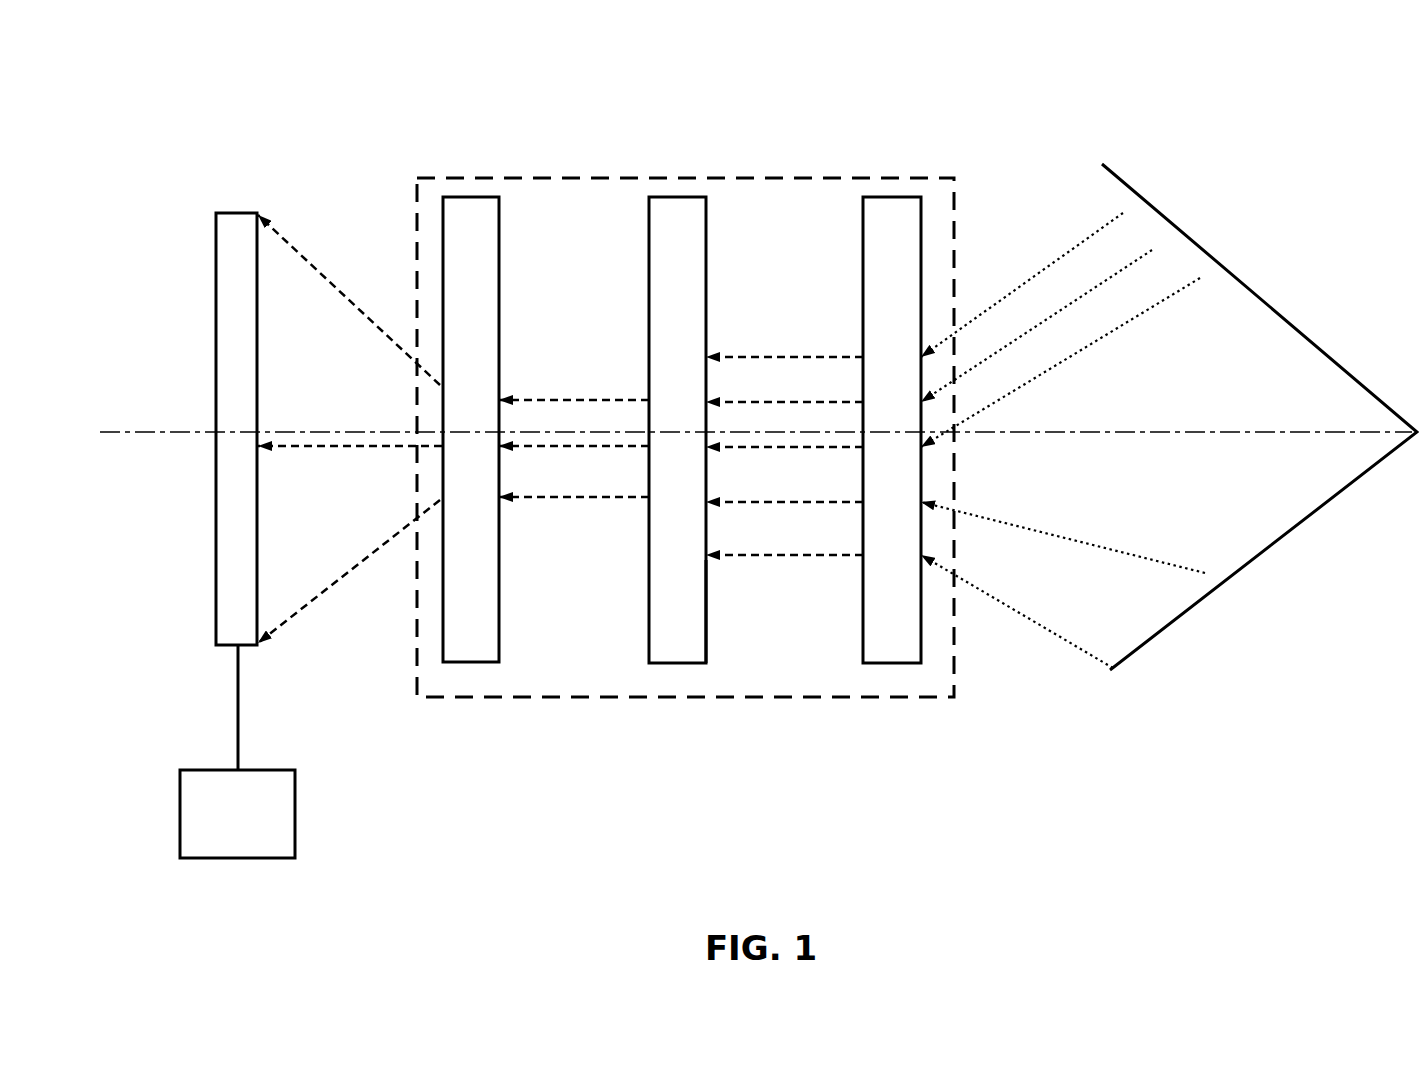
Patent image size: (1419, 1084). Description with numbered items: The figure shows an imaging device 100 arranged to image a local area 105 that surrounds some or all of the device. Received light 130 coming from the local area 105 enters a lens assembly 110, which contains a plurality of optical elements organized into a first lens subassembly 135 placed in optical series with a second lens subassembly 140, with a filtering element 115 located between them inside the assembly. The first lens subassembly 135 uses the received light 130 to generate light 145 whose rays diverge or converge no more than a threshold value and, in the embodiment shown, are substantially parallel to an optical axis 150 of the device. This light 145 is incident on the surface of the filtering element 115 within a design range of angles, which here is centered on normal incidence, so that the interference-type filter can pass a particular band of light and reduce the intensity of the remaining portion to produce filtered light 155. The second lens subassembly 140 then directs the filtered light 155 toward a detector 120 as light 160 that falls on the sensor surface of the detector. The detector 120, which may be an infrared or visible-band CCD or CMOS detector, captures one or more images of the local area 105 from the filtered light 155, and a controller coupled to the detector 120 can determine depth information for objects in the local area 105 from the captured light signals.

The imaging device 100 is at (162, 63).
The local area 105 is at (1253, 515).
The lens assembly 110 is at (847, 697).
The filtering element 115 is at (685, 207).
The detector 120 is at (238, 212).
The received light 130 is at (999, 598).
The first lens subassembly 135 is at (900, 197).
The second lens subassembly 140 is at (472, 195).
The light 145 is at (792, 355).
The optical axis 150 is at (1330, 430).
The filtered light 155 is at (560, 497).
The light 160 is at (342, 577).